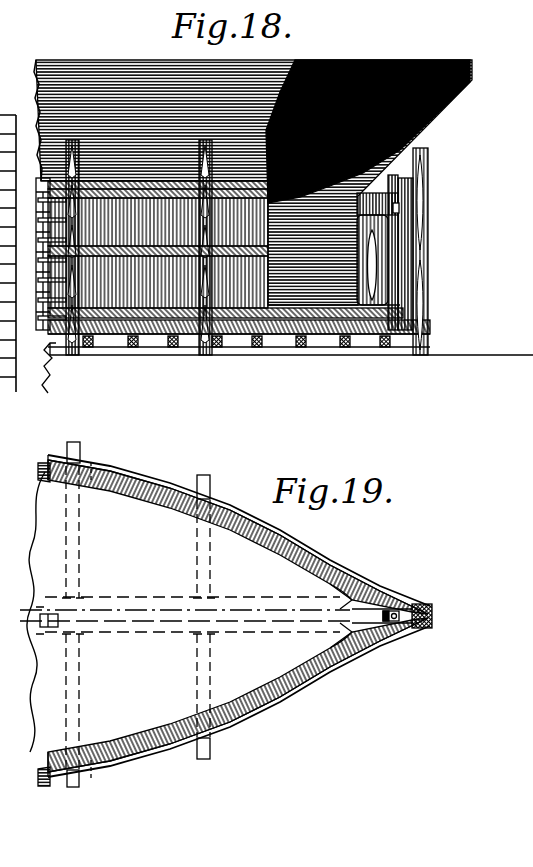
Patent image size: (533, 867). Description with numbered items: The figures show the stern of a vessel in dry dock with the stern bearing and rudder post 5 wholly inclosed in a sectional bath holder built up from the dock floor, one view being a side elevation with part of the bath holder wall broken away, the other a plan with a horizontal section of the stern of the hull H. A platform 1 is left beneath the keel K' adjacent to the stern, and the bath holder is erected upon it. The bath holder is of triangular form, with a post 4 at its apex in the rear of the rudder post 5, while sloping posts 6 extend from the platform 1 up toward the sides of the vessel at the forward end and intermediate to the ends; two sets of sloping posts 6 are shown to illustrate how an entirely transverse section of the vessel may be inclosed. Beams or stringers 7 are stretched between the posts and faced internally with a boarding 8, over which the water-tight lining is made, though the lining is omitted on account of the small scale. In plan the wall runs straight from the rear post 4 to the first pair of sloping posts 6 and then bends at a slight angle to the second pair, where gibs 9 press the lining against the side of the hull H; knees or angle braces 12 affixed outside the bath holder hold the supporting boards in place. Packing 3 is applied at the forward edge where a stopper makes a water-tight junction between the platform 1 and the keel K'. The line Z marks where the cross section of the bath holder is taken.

In FIG. 18, the hull H is at (112, 60).
In FIG. 19, the hull H is at (84, 612).
In FIG. 18, the platform 1 is at (377, 332).
In FIG. 19, the platform 1 is at (238, 633).
In FIG. 19, the packing 3 is at (43, 628).
In FIG. 18, the post 4 is at (430, 268).
In FIG. 19, the post 4 is at (420, 606).
In FIG. 18, the rudder post 5 is at (390, 178).
In FIG. 19, the rudder post 5 is at (389, 612).
In FIG. 18, the sloping posts 6 is at (66, 161).
In FIG. 19, the sloping posts 6 is at (75, 443).
In FIG. 18, the beams or stringers 7 is at (178, 250).
In FIG. 19, the beams or stringers 7 is at (153, 487).
In FIG. 18, the boarding 8 is at (292, 270).
In FIG. 19, the boarding 8 is at (245, 519).
In FIG. 18, the gibs 9 is at (42, 233).
In FIG. 19, the gibs 9 is at (40, 476).
In FIG. 18, the knees or angle braces 12 is at (52, 290).
In FIG. 19, the section line z, z Z is at (92, 619).
In FIG. 19, the keel K' is at (127, 643).